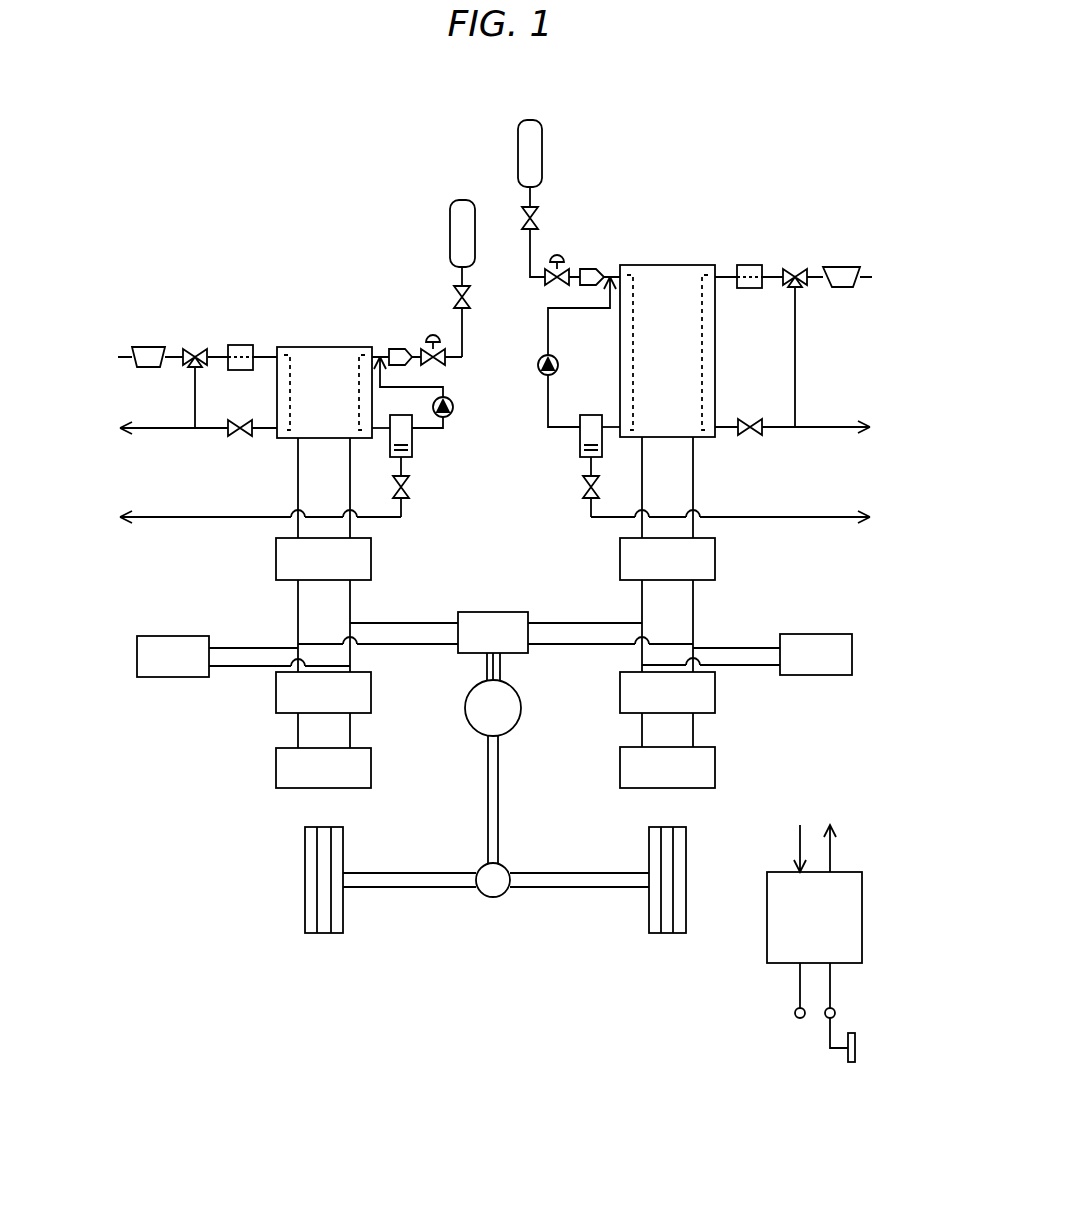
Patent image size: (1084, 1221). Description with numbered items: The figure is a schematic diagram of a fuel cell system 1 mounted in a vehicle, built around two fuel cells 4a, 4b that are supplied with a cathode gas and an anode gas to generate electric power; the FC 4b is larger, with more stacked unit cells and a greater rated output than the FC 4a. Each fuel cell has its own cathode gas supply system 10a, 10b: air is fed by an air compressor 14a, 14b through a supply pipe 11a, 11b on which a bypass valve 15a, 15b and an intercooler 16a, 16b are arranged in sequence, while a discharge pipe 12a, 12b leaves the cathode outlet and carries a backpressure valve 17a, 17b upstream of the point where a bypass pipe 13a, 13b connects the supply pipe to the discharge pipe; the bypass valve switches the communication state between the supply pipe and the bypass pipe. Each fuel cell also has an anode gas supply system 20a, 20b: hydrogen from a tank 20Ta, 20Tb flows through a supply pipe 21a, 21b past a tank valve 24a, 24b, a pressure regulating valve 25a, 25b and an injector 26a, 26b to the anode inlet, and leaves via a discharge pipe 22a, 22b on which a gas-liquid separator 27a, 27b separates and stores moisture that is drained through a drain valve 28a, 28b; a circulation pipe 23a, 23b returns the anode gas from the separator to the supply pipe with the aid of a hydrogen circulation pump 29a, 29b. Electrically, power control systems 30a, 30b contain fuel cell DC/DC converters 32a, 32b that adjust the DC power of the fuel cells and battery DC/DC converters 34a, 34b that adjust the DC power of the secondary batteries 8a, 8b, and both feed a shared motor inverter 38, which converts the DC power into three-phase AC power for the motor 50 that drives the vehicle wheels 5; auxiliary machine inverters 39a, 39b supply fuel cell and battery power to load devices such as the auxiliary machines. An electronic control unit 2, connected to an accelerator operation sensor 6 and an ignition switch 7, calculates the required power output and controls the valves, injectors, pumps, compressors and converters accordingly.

The fuel cell system 1 is at (793, 141).
The electronic control unit (ECU) 2 is at (862, 925).
The fuel cell (FC) 4a is at (330, 345).
The fuel cell (FC) 4b is at (675, 265).
The vehicle wheels 5 is at (305, 905).
The accelerator operation sensor 6 is at (835, 1013).
The ignition switch 7 is at (795, 1013).
The secondary battery (BAT) 8a is at (276, 770).
The secondary battery (BAT) 8b is at (715, 770).
The cathode gas supply system 10a is at (197, 309).
The cathode gas supply system 10b is at (836, 229).
The supply pipe 11a is at (266, 364).
The supply pipe 11b is at (727, 287).
The discharge pipe 12a is at (207, 432).
The discharge pipe 12b is at (787, 432).
The bypass pipe 13a is at (195, 408).
The bypass pipe 13b is at (797, 407).
The air compressor 14a is at (135, 347).
The air compressor 14b is at (855, 267).
The bypass valve 15a is at (188, 366).
The bypass valve 15b is at (805, 283).
The intercooler 16a is at (245, 345).
The intercooler 16b is at (750, 265).
The backpressure valve 17a is at (240, 420).
The backpressure valve 17b is at (755, 418).
The anode gas supply system 20a is at (386, 168).
The anode gas supply system 20b is at (611, 168).
The tank 20Ta is at (462, 198).
The tank 20Tb is at (530, 118).
The supply pipe 21a is at (446, 392).
The supply pipe 21b is at (530, 270).
The discharge pipe 22a is at (243, 515).
The discharge pipe 22b is at (755, 515).
The circulation pipe 23a is at (427, 432).
The circulation pipe 23b is at (568, 430).
The tank valve 24a is at (457, 285).
The tank valve 24b is at (540, 212).
The pressure regulating valve 25a is at (432, 340).
The pressure regulating valve 25b is at (557, 258).
The injector (INJ) 26a is at (400, 345).
The injector (INJ) 26b is at (590, 265).
The gas-liquid separator 27a is at (378, 450).
The gas-liquid separator 27b is at (603, 437).
The drain valve 28a is at (404, 518).
The drain valve 28b is at (590, 518).
The hydrogen circulation pump (HP) 29a is at (455, 422).
The hydrogen circulation pump (HP) 29b is at (542, 380).
The power control system 30a is at (170, 738).
The power control system 30b is at (828, 737).
The fuel cell DC/DC converter (FDC) 32a is at (276, 560).
The fuel cell DC/DC converter (FDC) 32b is at (715, 560).
The battery DC/DC converter (BDC) 34a is at (276, 695).
The battery DC/DC converter (BDC) 34b is at (715, 695).
The motor inverter (MINV) 38 is at (505, 612).
The auxiliary machine inverter (AINV) 39a is at (160, 636).
The auxiliary machine inverter (AINV) 39b is at (830, 634).
The motor 50 is at (521, 716).